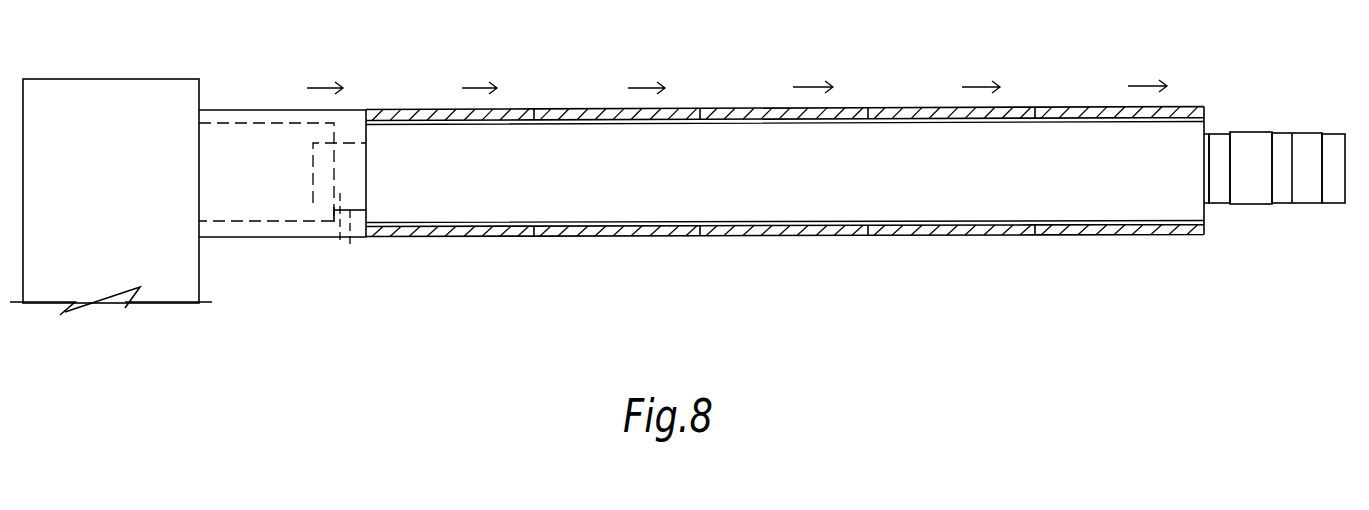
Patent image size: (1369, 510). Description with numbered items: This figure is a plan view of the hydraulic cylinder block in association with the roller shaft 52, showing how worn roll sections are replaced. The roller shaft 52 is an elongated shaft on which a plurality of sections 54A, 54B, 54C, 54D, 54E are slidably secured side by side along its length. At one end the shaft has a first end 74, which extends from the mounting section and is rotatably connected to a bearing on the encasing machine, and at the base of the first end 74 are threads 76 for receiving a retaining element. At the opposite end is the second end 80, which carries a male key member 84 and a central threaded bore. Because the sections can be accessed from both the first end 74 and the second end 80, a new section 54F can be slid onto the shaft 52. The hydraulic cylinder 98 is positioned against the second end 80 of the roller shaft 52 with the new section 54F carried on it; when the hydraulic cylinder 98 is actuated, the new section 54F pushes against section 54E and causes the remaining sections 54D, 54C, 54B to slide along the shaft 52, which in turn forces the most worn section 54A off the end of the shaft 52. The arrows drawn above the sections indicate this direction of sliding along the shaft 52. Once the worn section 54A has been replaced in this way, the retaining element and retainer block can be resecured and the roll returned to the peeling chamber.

The hydraulic cylinder 98 is at (111, 79).
The new section 54F is at (283, 110).
The section 54E is at (448, 109).
The section 54D is at (617, 109).
The section 54C is at (784, 108).
The section 54B is at (952, 107).
The most worn section 54A is at (1118, 106).
The roller shaft 52 is at (771, 186).
The threads 76 is at (1206, 133).
The first end 74 is at (1238, 204).
The second end 80 is at (339, 251).
The male key member 84 is at (351, 251).